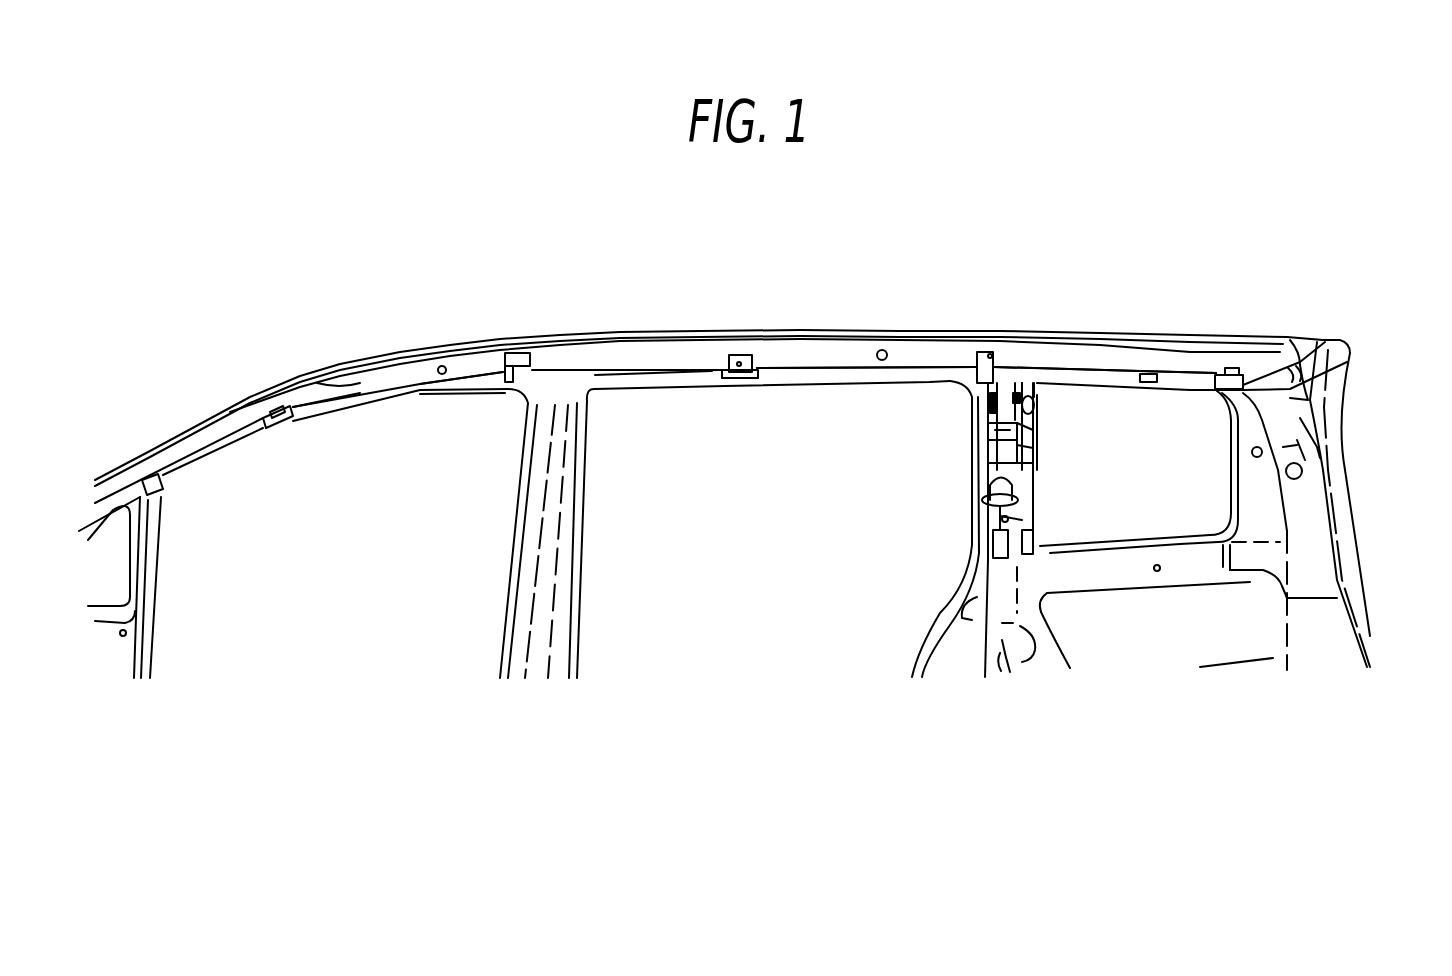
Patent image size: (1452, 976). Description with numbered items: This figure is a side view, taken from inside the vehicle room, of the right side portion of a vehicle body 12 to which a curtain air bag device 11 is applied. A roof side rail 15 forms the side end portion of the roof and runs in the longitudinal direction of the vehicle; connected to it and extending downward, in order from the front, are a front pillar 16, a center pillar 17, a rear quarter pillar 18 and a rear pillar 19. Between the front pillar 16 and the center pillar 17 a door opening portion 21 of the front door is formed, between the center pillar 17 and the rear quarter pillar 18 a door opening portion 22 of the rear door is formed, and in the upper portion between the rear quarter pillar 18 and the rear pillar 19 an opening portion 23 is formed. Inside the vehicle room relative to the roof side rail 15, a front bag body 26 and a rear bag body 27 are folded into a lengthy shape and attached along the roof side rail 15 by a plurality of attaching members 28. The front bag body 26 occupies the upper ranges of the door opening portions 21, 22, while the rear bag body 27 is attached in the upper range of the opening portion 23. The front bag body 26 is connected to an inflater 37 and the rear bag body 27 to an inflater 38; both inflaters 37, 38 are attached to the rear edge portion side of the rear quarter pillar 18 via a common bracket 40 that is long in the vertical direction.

The curtain air bag device 11 is at (1192, 356).
The vehicle body 12 is at (120, 452).
The roof side rail 15 is at (643, 332).
The front pillar 16 is at (158, 587).
The center pillar 17 is at (580, 538).
The rear quarter pillar 18 is at (971, 518).
The rear pillar 19 is at (1354, 489).
The door opening portion of the front door 21 is at (366, 396).
The door opening portion of the rear door 22 is at (834, 380).
The opening portion 23 is at (1235, 432).
The front bag body 26 is at (473, 376).
The rear bag body 27 is at (1085, 374).
The attaching member 28 is at (275, 407).
The inflater for driving the front bag body 37 is at (1034, 411).
The inflater for driving the rear bag body 38 is at (992, 437).
The bracket 40 is at (1047, 492).